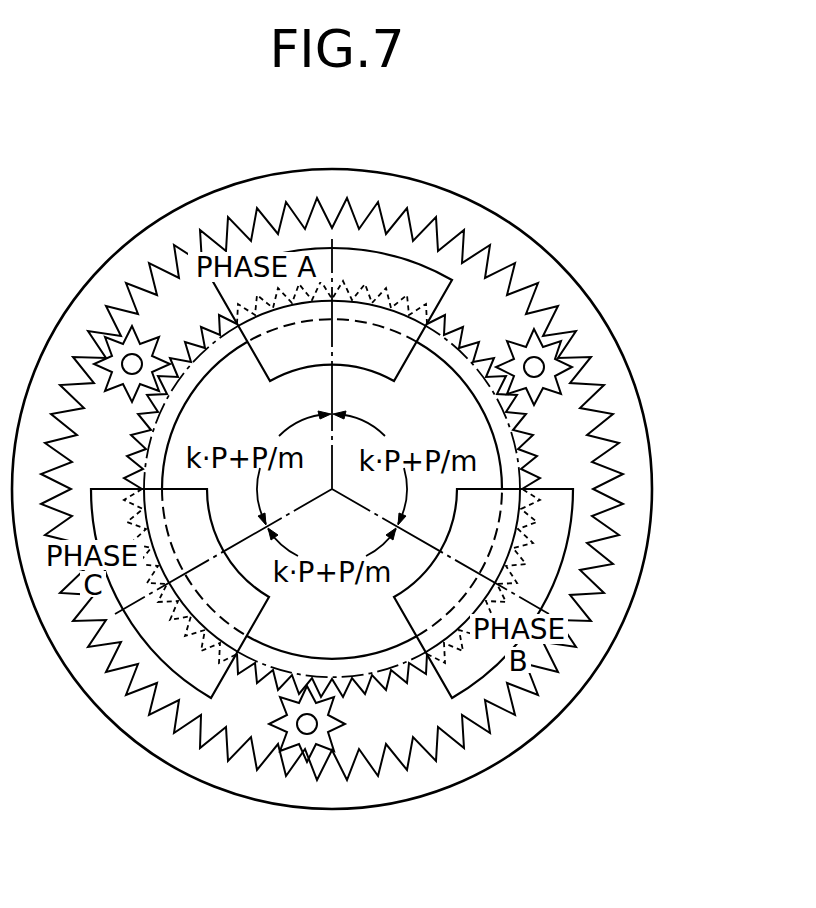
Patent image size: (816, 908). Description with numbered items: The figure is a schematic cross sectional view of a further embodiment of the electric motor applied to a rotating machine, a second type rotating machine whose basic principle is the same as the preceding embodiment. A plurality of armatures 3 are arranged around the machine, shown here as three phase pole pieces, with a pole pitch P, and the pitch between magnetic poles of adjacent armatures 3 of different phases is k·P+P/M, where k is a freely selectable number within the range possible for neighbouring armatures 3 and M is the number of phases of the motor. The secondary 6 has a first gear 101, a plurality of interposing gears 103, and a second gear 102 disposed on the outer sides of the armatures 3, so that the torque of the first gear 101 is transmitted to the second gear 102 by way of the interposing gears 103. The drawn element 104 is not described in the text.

The armature 3 is at (413, 267).
The secondary 6 is at (440, 360).
The first gear 101 is at (543, 447).
The second gear 102 is at (617, 503).
The interposing gear 103 is at (580, 372).
The planetary gear shaft 104 is at (537, 368).